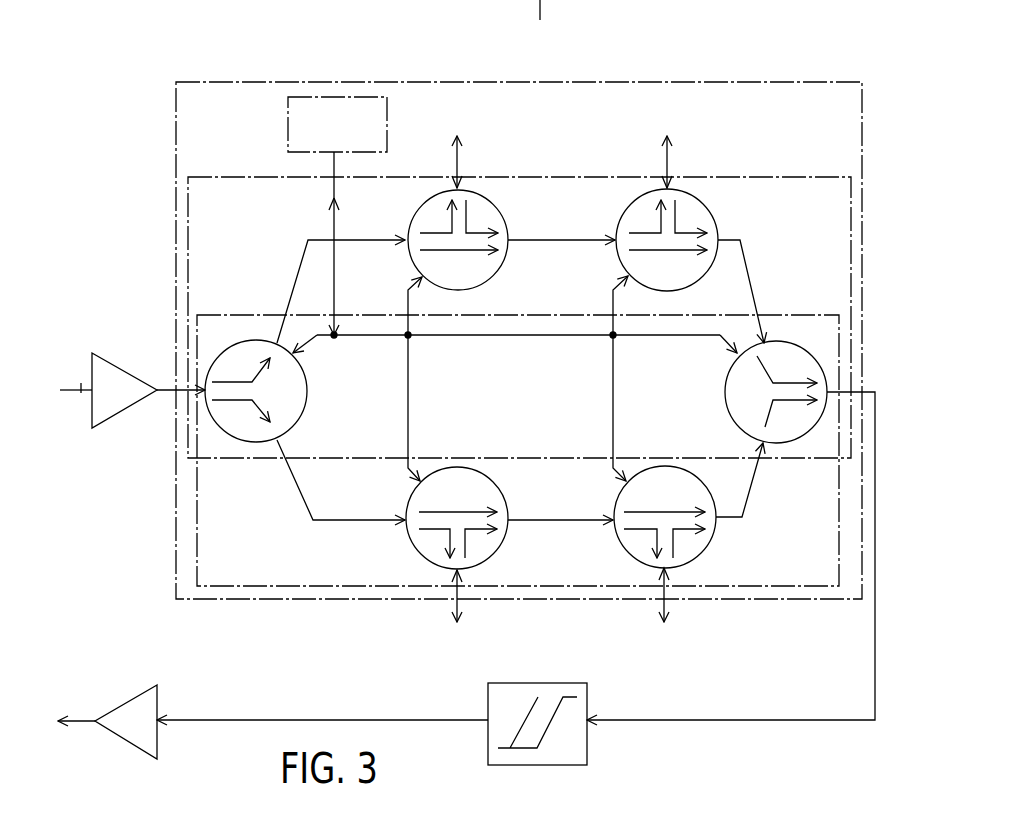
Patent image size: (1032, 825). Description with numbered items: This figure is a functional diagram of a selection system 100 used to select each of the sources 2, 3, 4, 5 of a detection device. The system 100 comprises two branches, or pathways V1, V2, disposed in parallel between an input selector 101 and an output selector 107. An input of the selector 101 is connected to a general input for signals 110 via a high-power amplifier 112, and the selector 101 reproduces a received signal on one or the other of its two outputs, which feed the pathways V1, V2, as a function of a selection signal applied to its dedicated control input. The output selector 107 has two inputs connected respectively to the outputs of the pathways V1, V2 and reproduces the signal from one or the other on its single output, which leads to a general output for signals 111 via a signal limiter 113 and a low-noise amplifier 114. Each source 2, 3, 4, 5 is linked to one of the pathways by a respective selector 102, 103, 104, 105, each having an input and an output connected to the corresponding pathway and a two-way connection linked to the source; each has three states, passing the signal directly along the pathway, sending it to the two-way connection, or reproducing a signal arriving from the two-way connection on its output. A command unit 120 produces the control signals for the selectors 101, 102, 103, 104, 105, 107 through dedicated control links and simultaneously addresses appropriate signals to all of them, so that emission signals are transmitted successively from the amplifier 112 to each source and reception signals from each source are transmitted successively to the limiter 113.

The selection system 100 is at (763, 81).
The input selector 101 is at (307, 396).
The selector 102 is at (506, 207).
The selector 103 is at (708, 206).
The selector 104 is at (408, 548).
The selector 105 is at (711, 545).
The output selector 107 is at (724, 397).
The general input for signals 110 is at (81, 388).
The general output for signals 111 is at (90, 719).
The high-power amplifier 112 is at (131, 365).
The signal limiter 113 is at (587, 693).
The low-noise amplifier 114 is at (140, 697).
The command unit 120 is at (323, 97).
The source 2 is at (455, 145).
The source 3 is at (666, 145).
The source 4 is at (455, 614).
The source 5 is at (664, 613).
The pathway V1 is at (766, 177).
The pathway V2 is at (337, 588).